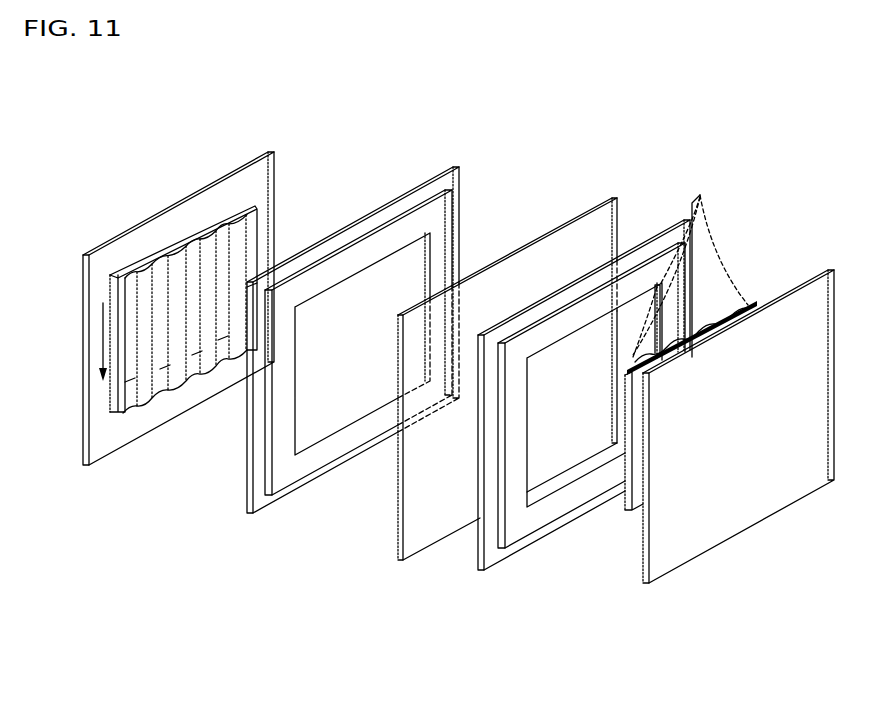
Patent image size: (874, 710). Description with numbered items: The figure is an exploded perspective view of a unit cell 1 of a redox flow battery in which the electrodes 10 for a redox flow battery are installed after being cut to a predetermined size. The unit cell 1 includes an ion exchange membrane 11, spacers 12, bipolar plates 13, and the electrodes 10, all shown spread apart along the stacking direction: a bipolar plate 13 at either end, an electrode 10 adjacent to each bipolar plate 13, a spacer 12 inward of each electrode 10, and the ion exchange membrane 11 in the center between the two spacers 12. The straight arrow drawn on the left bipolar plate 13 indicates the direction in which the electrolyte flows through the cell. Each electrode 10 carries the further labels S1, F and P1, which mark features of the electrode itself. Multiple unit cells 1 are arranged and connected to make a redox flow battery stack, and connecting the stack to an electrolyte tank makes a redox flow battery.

The unit cell 1 is at (560, 128).
The electrode for a redox flow battery 10 is at (444, 363).
The ion exchange membrane 11 is at (435, 515).
The spacer 12 is at (293, 470).
The bipolar plate 13 is at (110, 437).
The pleated sheet S1 is at (228, 212).
The frame of pleated element F is at (257, 207).
The pleat peaks P1 is at (252, 285).